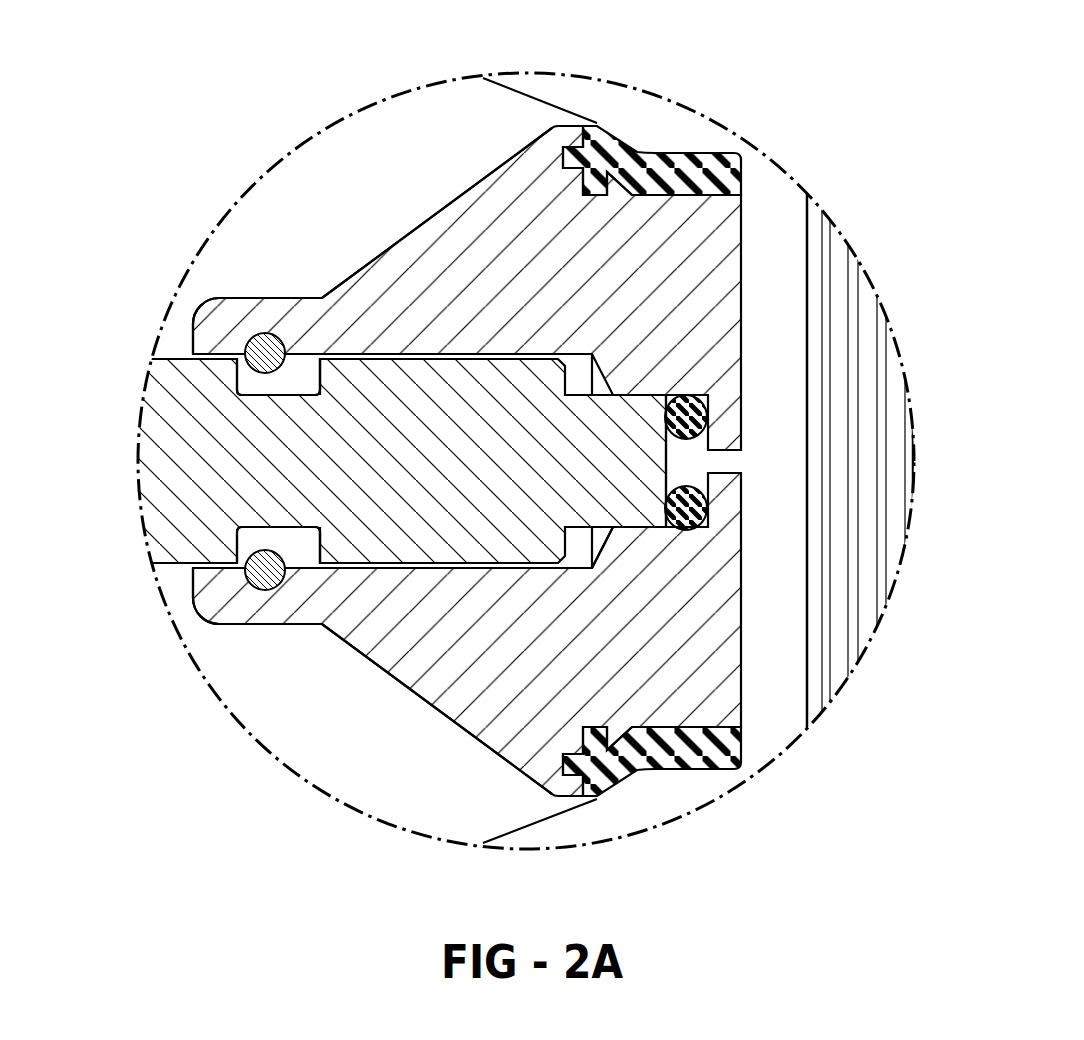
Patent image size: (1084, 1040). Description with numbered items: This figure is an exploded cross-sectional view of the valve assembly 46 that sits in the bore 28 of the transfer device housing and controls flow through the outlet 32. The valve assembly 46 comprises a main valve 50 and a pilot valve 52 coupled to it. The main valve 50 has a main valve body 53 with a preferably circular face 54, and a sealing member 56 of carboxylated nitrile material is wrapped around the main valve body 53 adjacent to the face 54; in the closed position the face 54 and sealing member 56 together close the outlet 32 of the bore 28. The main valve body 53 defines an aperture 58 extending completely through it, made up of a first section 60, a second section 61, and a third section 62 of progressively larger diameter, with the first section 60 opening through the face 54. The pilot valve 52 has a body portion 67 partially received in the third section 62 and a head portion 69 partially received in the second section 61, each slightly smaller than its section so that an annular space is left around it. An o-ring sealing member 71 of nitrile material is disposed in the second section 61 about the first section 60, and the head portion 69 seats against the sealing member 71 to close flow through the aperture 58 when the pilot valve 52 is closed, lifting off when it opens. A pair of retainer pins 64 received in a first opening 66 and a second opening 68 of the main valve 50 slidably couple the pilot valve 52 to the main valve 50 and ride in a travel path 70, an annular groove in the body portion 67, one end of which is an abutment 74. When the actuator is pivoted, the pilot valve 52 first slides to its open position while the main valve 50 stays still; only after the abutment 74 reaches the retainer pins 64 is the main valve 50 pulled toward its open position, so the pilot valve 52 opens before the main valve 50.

The bore 28 is at (400, 742).
The outlet 32 is at (752, 762).
The valve assembly 46 is at (692, 80).
The main valve 50 is at (749, 228).
The pilot valve 52 is at (116, 383).
The main valve body 53 is at (437, 228).
The face 54 is at (744, 313).
The sealing member 56 is at (720, 773).
The aperture 58 is at (758, 457).
The first section 60 is at (721, 483).
The second section 61 is at (676, 458).
The third section 62 is at (577, 569).
The retainer pins 64 is at (247, 350).
The first opening 66 is at (252, 580).
The body portion 67 is at (275, 455).
The second opening 68 is at (266, 336).
The head portion 69 is at (628, 485).
The travel path 70 is at (287, 396).
The sealing member 71 is at (700, 405).
The abutment 74 is at (320, 380).